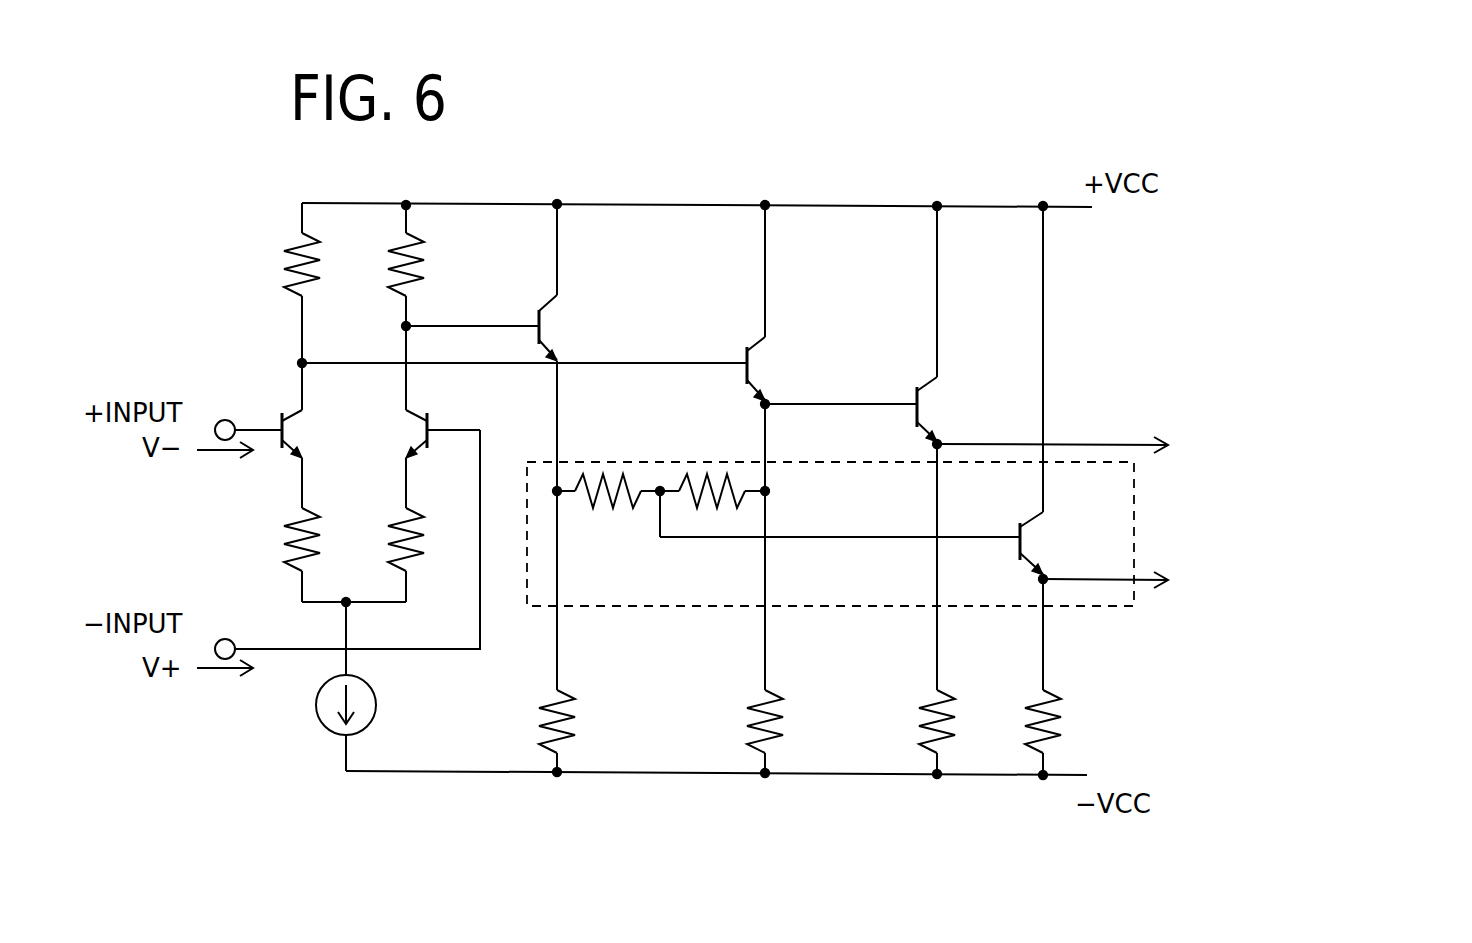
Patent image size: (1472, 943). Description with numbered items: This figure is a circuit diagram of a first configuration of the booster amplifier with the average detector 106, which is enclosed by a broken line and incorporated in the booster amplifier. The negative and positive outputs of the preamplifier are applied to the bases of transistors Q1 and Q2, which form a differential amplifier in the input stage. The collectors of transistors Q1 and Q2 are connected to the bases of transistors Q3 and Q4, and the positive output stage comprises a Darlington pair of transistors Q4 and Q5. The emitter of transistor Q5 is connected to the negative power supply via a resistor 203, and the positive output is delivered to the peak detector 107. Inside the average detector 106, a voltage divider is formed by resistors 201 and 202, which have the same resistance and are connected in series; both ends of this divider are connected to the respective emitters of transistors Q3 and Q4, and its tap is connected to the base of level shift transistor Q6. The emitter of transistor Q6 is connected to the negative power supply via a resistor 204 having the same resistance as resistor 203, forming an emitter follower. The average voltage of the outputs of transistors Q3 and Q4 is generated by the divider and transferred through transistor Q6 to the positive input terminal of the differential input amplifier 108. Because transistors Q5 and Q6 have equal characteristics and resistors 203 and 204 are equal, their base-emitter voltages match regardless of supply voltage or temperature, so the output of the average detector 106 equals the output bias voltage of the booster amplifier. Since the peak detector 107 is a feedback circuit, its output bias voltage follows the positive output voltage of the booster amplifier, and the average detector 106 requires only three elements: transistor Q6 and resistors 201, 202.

The resistor 201 is at (700, 478).
The resistor 202 is at (593, 518).
The resistor 203 is at (908, 710).
The resistor 204 is at (1015, 703).
The average detector 106 is at (1075, 606).
The peak detector 107 is at (1185, 434).
The differential input amplifier 108 is at (1227, 583).
The transistor Q1 is at (268, 416).
The transistor Q2 is at (419, 434).
The transistor Q3 is at (782, 301).
The transistor Q4 is at (572, 281).
The transistor Q5 is at (952, 322).
The level shift transistor Q6 is at (1054, 389).